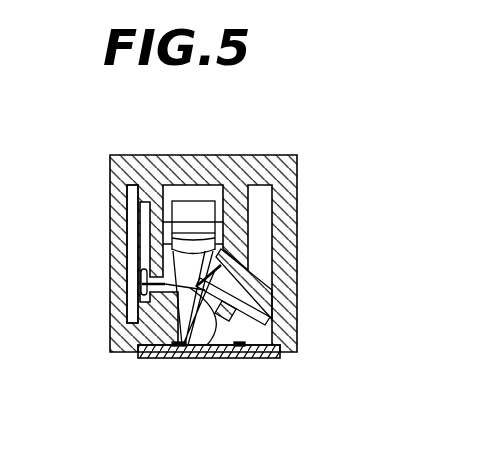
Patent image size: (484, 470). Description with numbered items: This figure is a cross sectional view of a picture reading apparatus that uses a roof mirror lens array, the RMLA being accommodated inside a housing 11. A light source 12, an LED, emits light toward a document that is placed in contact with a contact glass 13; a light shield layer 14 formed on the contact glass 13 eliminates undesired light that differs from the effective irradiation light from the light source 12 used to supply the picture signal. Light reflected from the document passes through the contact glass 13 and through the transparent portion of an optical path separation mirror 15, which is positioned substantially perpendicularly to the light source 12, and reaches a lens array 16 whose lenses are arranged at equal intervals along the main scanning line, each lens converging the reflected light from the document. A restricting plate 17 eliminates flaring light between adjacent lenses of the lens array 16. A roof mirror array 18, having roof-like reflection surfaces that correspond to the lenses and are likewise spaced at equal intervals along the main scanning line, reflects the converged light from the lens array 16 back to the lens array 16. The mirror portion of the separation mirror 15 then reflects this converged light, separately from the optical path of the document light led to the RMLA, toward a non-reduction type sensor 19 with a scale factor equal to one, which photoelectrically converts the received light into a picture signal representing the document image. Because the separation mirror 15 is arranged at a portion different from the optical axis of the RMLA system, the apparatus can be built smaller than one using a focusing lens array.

The housing 11 is at (297, 218).
The light source 12 is at (258, 323).
The contact glass 13 is at (260, 358).
The light shield layer 14 is at (175, 358).
The optical path separation mirror 15 is at (200, 360).
The lens array 16 is at (218, 244).
The restricting plate 17 is at (182, 230).
The roof mirror array 18 is at (193, 210).
The non-reduction type sensor 19 is at (132, 205).